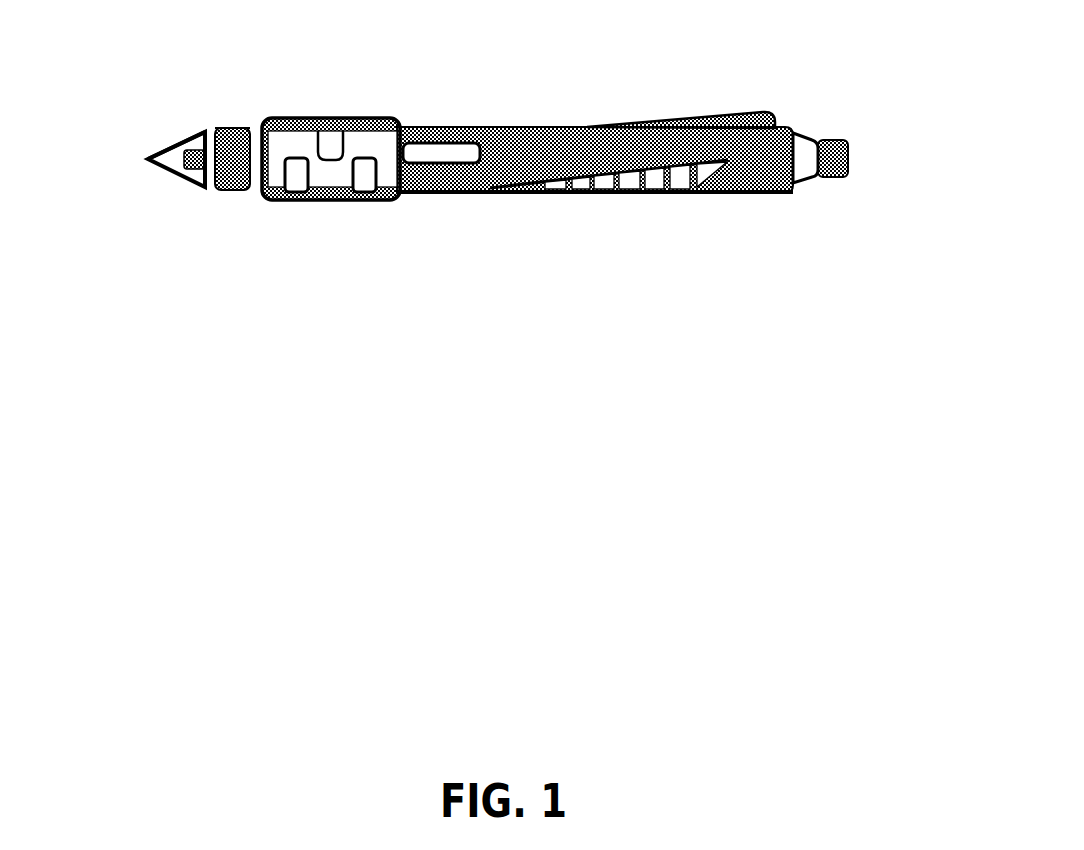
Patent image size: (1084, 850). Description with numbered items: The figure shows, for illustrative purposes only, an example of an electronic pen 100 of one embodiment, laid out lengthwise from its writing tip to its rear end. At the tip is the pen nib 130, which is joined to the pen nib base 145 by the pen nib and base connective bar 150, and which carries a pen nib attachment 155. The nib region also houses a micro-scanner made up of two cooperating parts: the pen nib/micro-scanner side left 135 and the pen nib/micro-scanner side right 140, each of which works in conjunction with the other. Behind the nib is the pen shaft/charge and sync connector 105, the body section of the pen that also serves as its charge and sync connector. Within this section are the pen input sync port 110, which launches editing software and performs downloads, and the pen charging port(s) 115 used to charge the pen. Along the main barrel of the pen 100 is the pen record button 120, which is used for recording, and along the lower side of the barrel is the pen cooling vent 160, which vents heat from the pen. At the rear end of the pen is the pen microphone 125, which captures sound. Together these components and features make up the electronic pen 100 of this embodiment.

The pen 100 is at (519, 150).
The pen shaft/charge and sync connector 105 is at (387, 145).
The pen input sync port 110 is at (331, 143).
The pen charging port(s) 115 is at (362, 200).
The pen record button 120 is at (756, 114).
The pen microphone 125 is at (848, 164).
The pen nib 130 is at (148, 159).
The pen nib/micro-scanner side left 135 is at (229, 143).
The pen nib/micro-scanner side right 140 is at (227, 190).
The pen nib base 145 is at (247, 128).
The pen nib and base connective bar 150 is at (200, 130).
The pen nib attachment 155 is at (192, 180).
The pen cooling vent 160 is at (652, 193).